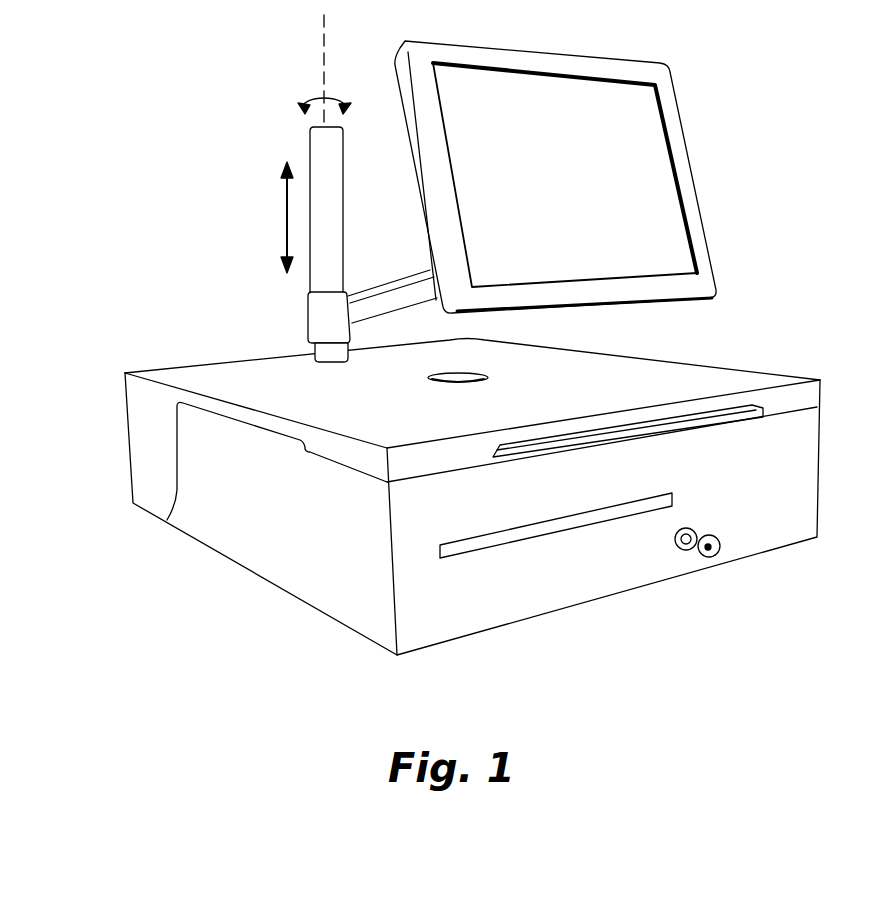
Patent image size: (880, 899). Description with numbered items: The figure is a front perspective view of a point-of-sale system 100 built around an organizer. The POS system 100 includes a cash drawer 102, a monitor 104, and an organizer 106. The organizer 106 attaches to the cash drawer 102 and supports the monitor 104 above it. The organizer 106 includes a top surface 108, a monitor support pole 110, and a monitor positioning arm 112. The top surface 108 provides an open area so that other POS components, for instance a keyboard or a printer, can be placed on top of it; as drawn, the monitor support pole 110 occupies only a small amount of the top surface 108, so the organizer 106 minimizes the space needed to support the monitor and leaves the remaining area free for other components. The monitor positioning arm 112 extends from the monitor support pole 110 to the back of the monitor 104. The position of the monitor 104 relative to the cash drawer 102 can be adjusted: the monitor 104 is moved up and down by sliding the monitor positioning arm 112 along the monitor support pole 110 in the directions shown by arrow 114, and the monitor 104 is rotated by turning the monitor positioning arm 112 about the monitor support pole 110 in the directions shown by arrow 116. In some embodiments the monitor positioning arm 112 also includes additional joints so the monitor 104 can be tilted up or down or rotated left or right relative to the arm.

The POS system 100 is at (172, 626).
The cash drawer 102 is at (765, 503).
The monitor 104 is at (673, 130).
The organizer 106 is at (133, 487).
The top surface 108 is at (677, 378).
The monitor support pole 110 is at (310, 135).
The monitor positioning arm 112 is at (393, 278).
The arrow 114 is at (285, 195).
The arrow 116 is at (305, 97).